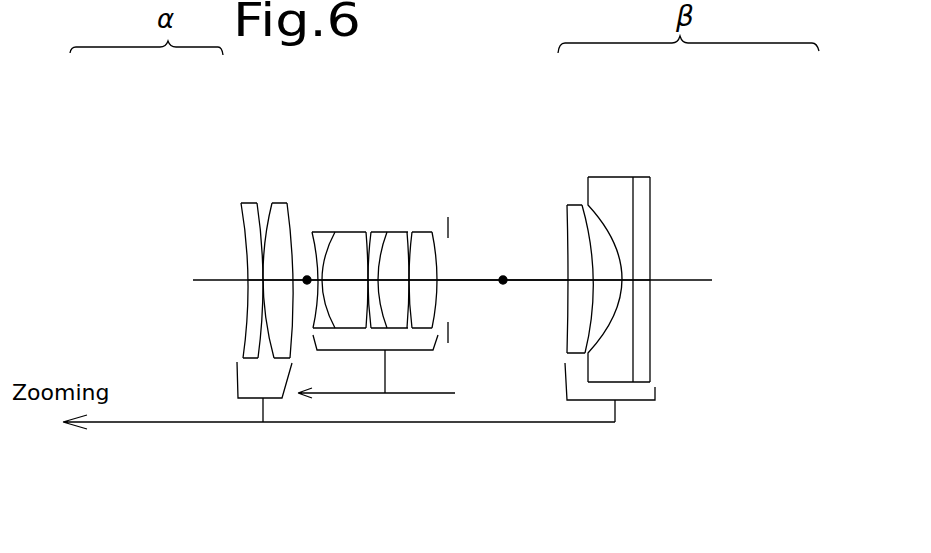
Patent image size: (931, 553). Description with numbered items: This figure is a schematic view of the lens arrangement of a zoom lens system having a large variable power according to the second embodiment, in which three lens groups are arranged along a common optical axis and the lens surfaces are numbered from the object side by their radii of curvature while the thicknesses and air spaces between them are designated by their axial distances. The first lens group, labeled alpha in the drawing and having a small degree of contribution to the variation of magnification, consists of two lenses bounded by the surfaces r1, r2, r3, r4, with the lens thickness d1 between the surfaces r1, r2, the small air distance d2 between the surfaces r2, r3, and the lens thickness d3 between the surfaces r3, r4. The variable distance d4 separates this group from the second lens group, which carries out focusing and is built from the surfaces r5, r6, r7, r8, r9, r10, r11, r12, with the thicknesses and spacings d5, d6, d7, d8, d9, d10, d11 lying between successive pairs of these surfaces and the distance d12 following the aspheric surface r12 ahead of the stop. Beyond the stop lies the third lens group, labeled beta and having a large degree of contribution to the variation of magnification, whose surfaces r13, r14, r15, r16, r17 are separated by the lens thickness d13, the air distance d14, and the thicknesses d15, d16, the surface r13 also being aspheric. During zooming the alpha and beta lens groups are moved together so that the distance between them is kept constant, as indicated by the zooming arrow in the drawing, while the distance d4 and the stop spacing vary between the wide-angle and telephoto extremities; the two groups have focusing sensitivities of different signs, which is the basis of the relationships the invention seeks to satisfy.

The radius of curvature of lens surface 1 r1 is at (241, 203).
The radius of curvature of lens surface 2 r2 is at (257, 203).
The radius of curvature of lens surface 3 r3 is at (272, 203).
The radius of curvature of lens surface 4 r4 is at (287, 203).
The radius of curvature of lens surface 5 r5 is at (312, 232).
The radius of curvature of lens surface 6 r6 is at (335, 232).
The radius of curvature of lens surface 7 r7 is at (366, 232).
The radius of curvature of lens surface 8 r8 is at (371, 232).
The radius of curvature of lens surface 9 r9 is at (387, 232).
The radius of curvature of lens surface 10 r10 is at (407, 232).
The radius of curvature of lens surface 11 r11 is at (412, 232).
The radius of curvature of lens surface 12 r12 is at (432, 232).
The radius of curvature of lens surface 13 r13 is at (567, 205).
The radius of curvature of lens surface 14 r14 is at (582, 205).
The radius of curvature of lens surface 15 r15 is at (590, 205).
The radius of curvature of lens surface 16 r16 is at (633, 177).
The radius of curvature of lens surface 17 r17 is at (650, 177).
The lens thickness between surfaces 1 and 2 d1 is at (255, 281).
The distance between surfaces 2 and 3 d2 is at (263, 281).
The lens thickness between surfaces 3 and 4 d3 is at (278, 281).
The distance between surfaces 4 and 5 d4 is at (303, 281).
The lens thickness between surfaces 5 and 6 d5 is at (320, 281).
The lens thickness between surfaces 6 and 7 d6 is at (345, 281).
The distance between surfaces 7 and 8 d7 is at (368, 281).
The lens thickness between surfaces 8 and 9 d8 is at (374, 281).
The lens thickness between surfaces 9 and 10 d9 is at (393, 281).
The distance between surfaces 10 and 11 d10 is at (409, 281).
The lens thickness between surfaces 11 and 12 d11 is at (426, 281).
The distance between surface 12 and the stop d12 is at (503, 281).
The lens thickness between surfaces 13 and 14 d13 is at (580, 281).
The distance between surfaces 14 and 15 d14 is at (607, 281).
The lens thickness between surfaces 15 and 16 d15 is at (628, 281).
The lens thickness between surfaces 16 and 17 d16 is at (641, 281).